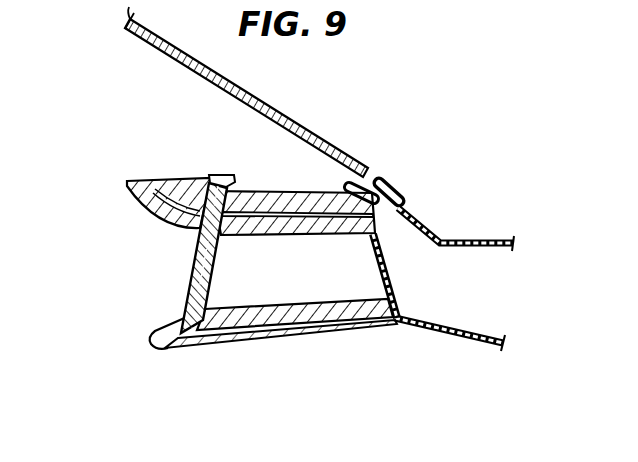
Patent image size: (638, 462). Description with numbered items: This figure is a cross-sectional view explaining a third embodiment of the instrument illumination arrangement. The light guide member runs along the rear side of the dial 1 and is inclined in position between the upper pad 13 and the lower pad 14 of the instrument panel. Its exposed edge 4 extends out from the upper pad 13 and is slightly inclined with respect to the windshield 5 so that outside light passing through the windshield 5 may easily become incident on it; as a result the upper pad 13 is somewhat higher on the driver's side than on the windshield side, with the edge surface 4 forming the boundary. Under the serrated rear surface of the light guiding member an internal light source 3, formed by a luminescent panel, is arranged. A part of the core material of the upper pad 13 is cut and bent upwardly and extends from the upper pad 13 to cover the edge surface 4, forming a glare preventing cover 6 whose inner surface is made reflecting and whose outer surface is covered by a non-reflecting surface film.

The dial 1 is at (146, 173).
The internal light source 3 is at (223, 268).
The exposed edge 4 is at (197, 345).
The windshield 5 is at (283, 112).
The glare preventing cover 6 is at (226, 178).
The upper pad 13 is at (127, 182).
The lower pad 14 is at (153, 344).